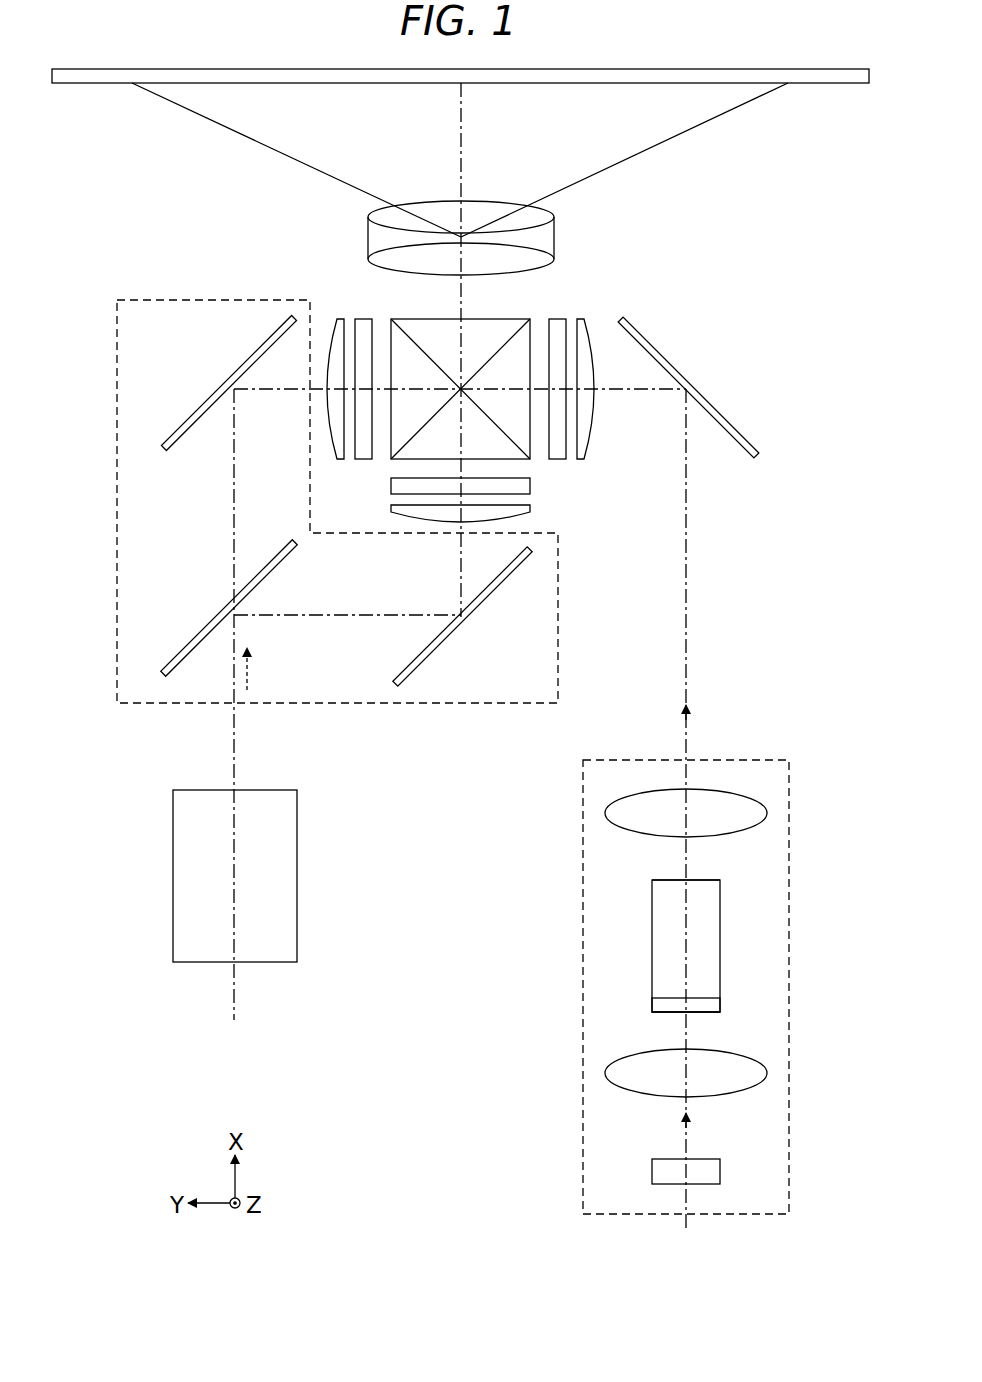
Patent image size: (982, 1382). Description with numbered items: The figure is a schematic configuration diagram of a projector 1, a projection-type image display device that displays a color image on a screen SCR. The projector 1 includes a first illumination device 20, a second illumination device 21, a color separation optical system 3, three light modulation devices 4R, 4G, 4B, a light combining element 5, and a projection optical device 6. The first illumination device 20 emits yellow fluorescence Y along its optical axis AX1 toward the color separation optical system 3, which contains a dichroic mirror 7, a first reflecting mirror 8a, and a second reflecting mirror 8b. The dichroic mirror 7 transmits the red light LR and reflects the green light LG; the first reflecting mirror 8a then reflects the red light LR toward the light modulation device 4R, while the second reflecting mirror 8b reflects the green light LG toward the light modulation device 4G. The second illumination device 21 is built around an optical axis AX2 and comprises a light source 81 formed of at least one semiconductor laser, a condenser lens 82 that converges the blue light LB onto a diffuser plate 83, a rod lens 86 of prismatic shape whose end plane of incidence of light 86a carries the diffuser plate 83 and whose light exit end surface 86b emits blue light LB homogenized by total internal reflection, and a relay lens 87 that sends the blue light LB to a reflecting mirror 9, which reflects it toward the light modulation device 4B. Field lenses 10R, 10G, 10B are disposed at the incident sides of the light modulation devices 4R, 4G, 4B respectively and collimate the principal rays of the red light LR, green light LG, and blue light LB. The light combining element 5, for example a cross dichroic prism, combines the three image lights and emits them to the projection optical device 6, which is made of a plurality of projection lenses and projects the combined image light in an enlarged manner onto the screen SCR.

The projector 1 is at (808, 280).
The screen SCR is at (837, 83).
The projection optical device 6 is at (440, 213).
The light combining element 5 is at (483, 323).
The light modulation device 4R is at (365, 319).
The light modulation device 4B is at (557, 319).
The light modulation device 4G is at (395, 486).
The field lens 10R is at (341, 319).
The field lens 10B is at (580, 319).
The field lens 10G is at (395, 509).
The color separation optical system 3 is at (117, 440).
The first reflecting mirror 8a is at (207, 400).
The second reflecting mirror 8b is at (437, 650).
The dichroic mirror 7 is at (192, 638).
The reflecting mirror 9 is at (715, 407).
The red light LR is at (232, 518).
The green light LG is at (460, 572).
The blue light LB is at (700, 540).
The fluorescence Y is at (250, 688).
The first illumination device 20 is at (297, 805).
The optical axis AX1 is at (240, 986).
The second illumination device 21 is at (583, 803).
The relay lens 87 is at (755, 810).
The rod lens 86 is at (707, 938).
The light exit end surface 86b is at (672, 882).
The end plane of incidence of light 86a is at (665, 1002).
The diffuser plate 83 is at (708, 1007).
The condenser lens 82 is at (755, 1073).
The light source 81 is at (708, 1175).
The optical axis AX2 is at (688, 1225).